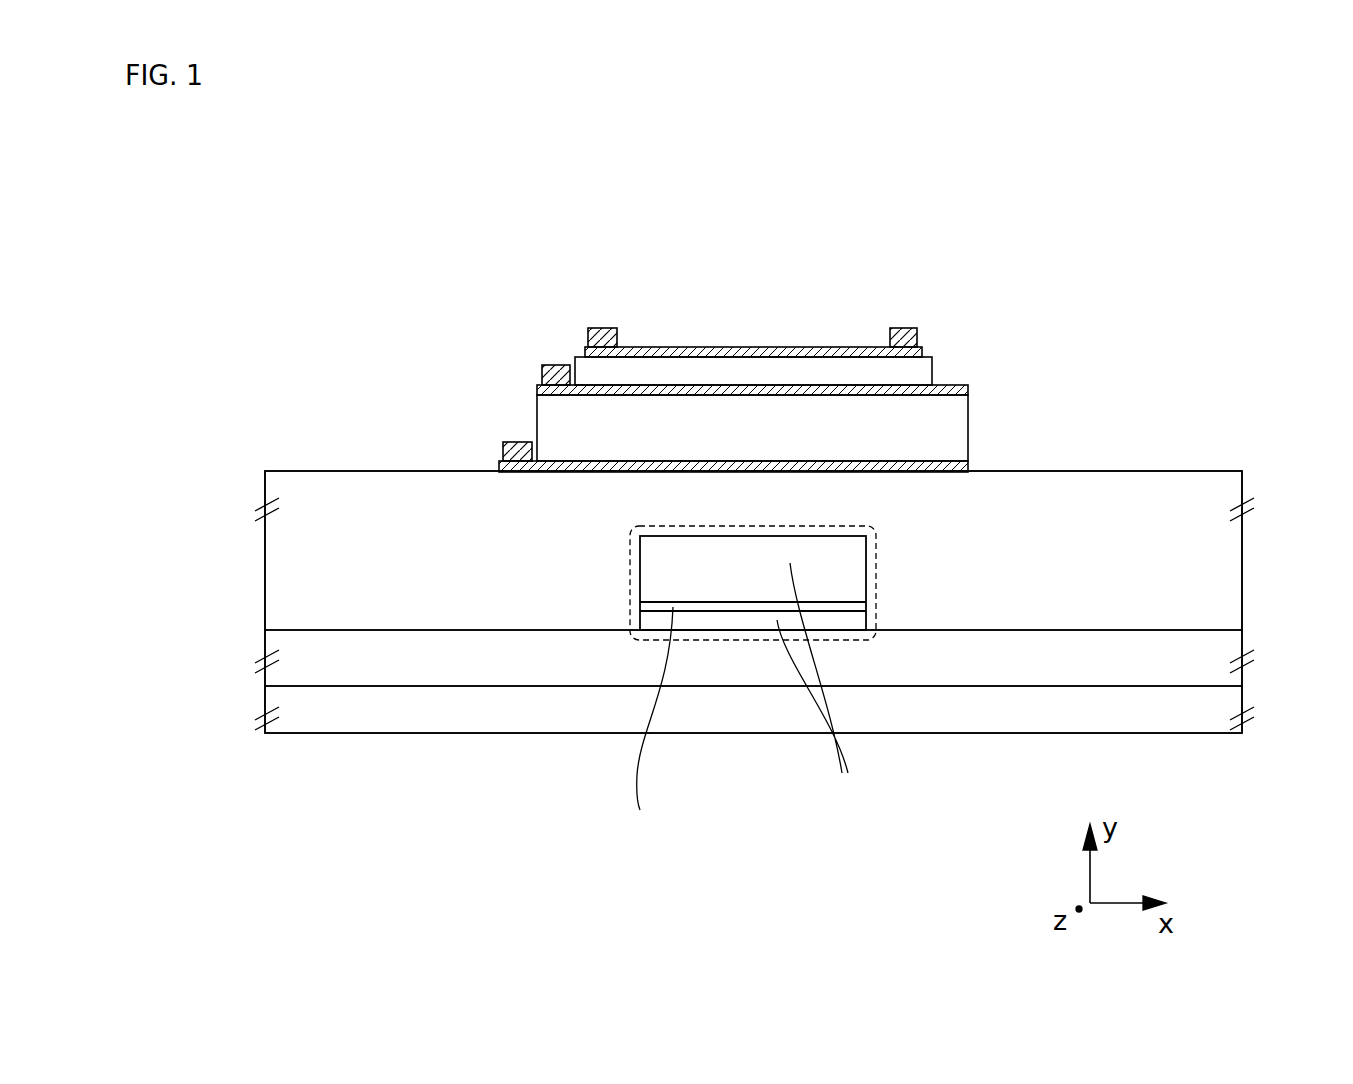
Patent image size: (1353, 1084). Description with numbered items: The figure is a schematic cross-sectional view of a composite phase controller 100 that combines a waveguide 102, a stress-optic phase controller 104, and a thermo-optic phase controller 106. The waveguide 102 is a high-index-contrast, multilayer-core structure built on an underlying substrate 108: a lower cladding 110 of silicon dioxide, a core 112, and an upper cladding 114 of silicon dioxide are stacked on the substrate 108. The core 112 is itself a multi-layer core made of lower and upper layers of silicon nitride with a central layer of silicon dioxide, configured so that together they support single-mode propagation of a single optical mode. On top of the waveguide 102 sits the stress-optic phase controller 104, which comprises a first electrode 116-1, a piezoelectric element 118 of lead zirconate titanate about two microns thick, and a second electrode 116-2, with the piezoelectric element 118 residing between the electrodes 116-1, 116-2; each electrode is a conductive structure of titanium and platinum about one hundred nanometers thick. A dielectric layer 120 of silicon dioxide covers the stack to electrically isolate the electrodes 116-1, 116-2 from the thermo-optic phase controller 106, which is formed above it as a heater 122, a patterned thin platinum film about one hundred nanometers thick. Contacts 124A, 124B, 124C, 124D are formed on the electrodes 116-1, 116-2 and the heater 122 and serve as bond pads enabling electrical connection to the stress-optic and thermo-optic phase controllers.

The phase controller 100 is at (338, 158).
The waveguide 102 is at (247, 471).
The stress-optic phase controller 104 is at (478, 412).
The thermo-optic phase controller 106 is at (516, 334).
The substrate 108 is at (1190, 725).
The lower cladding 110 is at (1205, 673).
The core 112 is at (633, 613).
The upper cladding 114 is at (1213, 608).
The electrode 116-1 is at (968, 466).
The electrode 116-2 is at (968, 390).
The piezoelectric element 118 is at (752, 428).
The dielectric layer 120 is at (932, 368).
The heater 122 is at (925, 353).
The contact 124A is at (504, 452).
The contact 124B is at (553, 365).
The contact 124C is at (602, 328).
The contact 124D is at (902, 328).